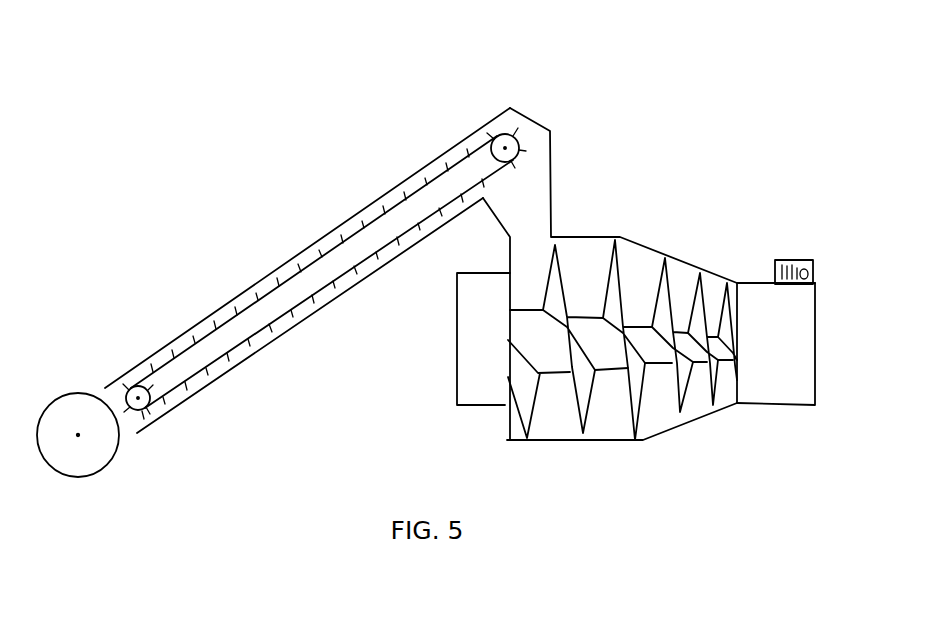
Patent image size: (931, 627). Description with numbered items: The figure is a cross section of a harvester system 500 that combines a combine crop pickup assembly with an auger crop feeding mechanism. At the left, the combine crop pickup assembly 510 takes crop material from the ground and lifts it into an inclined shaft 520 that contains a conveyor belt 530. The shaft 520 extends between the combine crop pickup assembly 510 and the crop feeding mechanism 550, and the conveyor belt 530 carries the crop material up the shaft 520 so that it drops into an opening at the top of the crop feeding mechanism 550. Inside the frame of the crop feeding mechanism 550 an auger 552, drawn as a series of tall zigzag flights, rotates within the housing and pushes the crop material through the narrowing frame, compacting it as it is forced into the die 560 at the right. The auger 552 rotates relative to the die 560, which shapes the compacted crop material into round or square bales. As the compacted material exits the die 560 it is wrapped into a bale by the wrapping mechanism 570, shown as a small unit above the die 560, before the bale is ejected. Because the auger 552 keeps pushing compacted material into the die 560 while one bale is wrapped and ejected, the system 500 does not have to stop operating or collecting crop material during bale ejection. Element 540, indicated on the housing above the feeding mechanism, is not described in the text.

The system 500 is at (592, 207).
The combine crop pickup assembly 510 is at (78, 435).
The shaft 520 is at (258, 280).
The conveyor belt 530 is at (335, 248).
The housing / hopper 540 is at (552, 182).
The crop feeding mechanism 550 is at (540, 442).
The auger 552 is at (600, 343).
The die 560 is at (760, 407).
The wrapping mechanism 570 is at (795, 260).